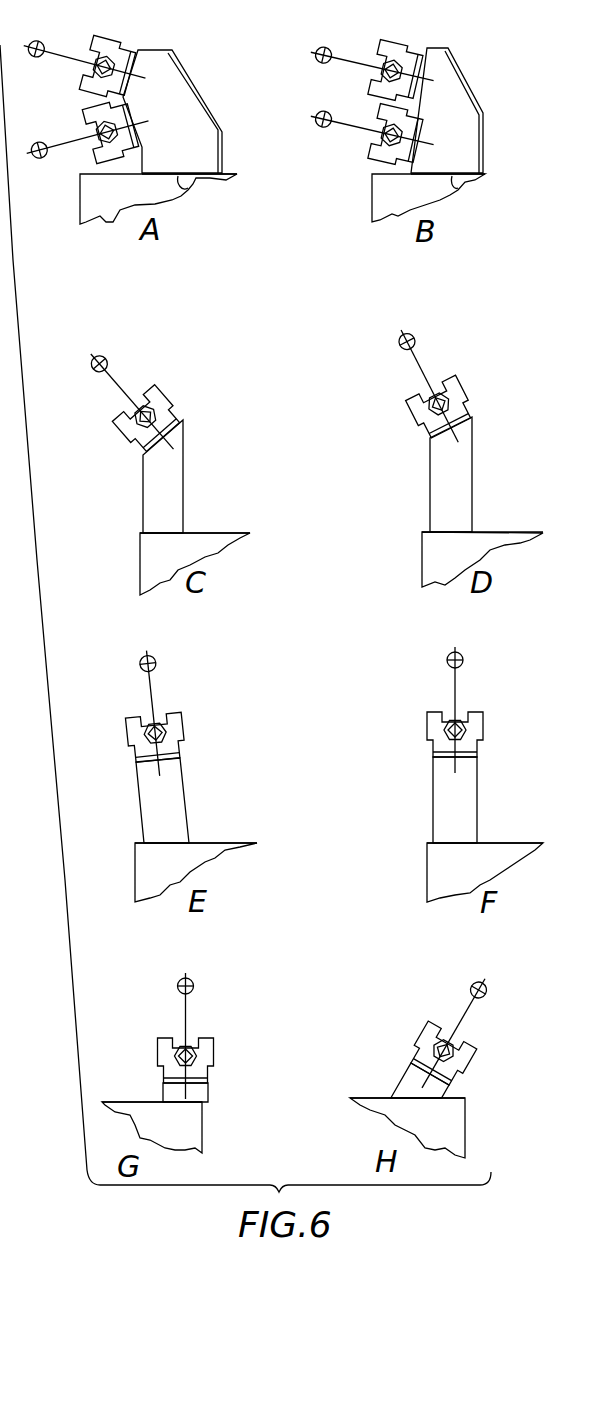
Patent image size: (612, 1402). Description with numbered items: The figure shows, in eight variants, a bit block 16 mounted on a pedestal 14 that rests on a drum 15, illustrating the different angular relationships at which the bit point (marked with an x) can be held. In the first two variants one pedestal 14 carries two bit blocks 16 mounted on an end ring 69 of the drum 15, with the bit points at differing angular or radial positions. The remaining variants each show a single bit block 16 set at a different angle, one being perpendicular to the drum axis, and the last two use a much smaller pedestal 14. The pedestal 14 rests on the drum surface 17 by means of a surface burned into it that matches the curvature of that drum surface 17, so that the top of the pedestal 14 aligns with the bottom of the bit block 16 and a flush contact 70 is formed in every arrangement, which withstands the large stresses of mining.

The pedestal 14 is at (200, 135).
The drum 15 is at (113, 203).
The bit block 16 is at (428, 1032).
The drum surface 17 is at (222, 533).
The end ring 69 is at (190, 180).
The flush contact 70 is at (132, 87).